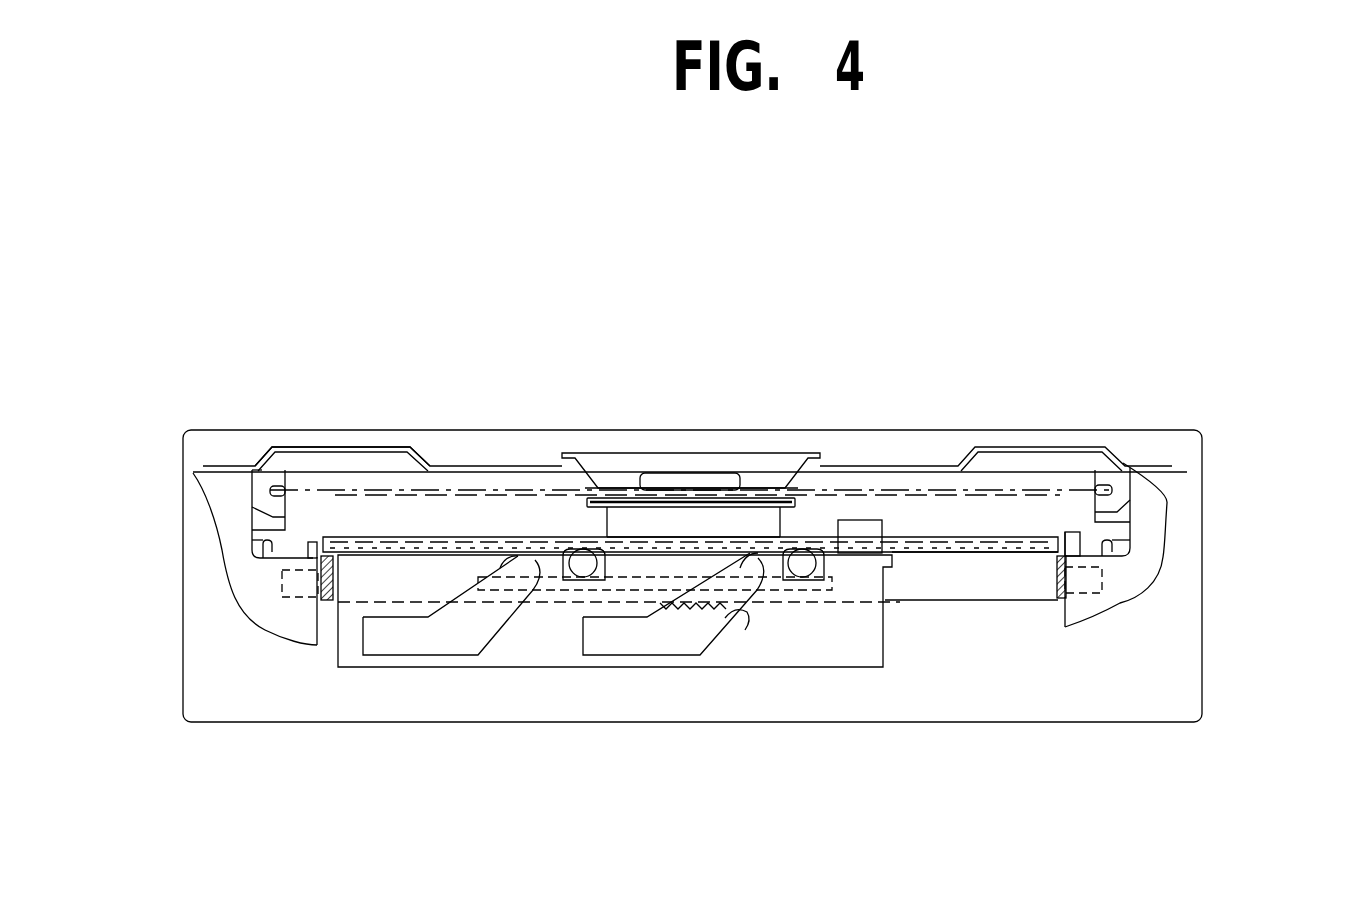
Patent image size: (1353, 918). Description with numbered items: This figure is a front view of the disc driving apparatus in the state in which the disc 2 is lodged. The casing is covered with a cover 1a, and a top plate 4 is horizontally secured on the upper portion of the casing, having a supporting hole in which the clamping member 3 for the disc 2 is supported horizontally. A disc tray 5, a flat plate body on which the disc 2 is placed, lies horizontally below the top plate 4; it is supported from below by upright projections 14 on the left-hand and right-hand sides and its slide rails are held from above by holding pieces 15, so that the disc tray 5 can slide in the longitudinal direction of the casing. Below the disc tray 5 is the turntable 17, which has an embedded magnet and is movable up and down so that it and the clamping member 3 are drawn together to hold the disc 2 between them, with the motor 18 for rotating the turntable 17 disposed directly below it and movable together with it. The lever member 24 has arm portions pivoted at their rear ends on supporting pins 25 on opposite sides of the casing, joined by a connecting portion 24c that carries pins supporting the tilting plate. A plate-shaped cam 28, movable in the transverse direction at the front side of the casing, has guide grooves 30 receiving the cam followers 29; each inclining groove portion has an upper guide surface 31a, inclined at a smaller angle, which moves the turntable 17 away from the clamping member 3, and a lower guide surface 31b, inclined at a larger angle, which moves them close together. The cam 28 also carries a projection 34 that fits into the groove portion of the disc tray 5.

The cover 1a is at (1203, 627).
The disc 2 is at (1000, 490).
The clamping member 3 is at (790, 452).
The top plate 4 is at (340, 450).
The disc tray 5 is at (305, 465).
The upright projections 14 is at (252, 540).
The holding pieces 15 is at (265, 470).
The turntable 17 is at (692, 495).
The motor 18 is at (625, 520).
The lever member 24 is at (997, 600).
The connecting portion 24c is at (940, 588).
The supporting pins 25 is at (295, 600).
The cam 28 is at (625, 668).
The cam followers 29 is at (583, 577).
The guide grooves 30 is at (420, 642).
The upper guide surface 31a is at (516, 553).
The lower guide surface 31b is at (497, 617).
The projection 34 is at (866, 527).